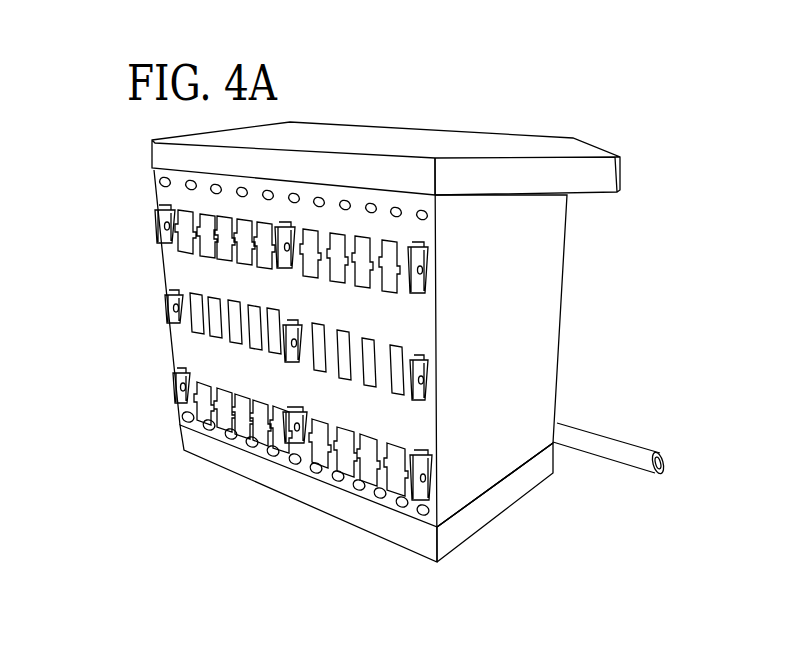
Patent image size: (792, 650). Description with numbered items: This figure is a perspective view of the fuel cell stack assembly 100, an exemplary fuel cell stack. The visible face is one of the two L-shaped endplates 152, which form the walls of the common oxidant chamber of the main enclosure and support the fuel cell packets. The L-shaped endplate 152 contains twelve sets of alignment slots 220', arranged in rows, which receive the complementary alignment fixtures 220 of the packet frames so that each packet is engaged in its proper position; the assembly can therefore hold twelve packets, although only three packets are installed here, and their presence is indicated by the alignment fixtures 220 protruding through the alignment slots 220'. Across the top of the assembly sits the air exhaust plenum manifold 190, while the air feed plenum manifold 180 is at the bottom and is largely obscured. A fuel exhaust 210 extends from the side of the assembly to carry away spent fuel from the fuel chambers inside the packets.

The fuel cell stack assembly 100 is at (663, 147).
The exhaust plenum manifold 190 is at (458, 142).
The L-shaped endplate 152 is at (533, 260).
The fuel exhaust 210 is at (640, 455).
The inlet plenum manifold 180 is at (235, 463).
The alignment fixture 220 is at (280, 352).
The alignment slot 220' is at (257, 298).